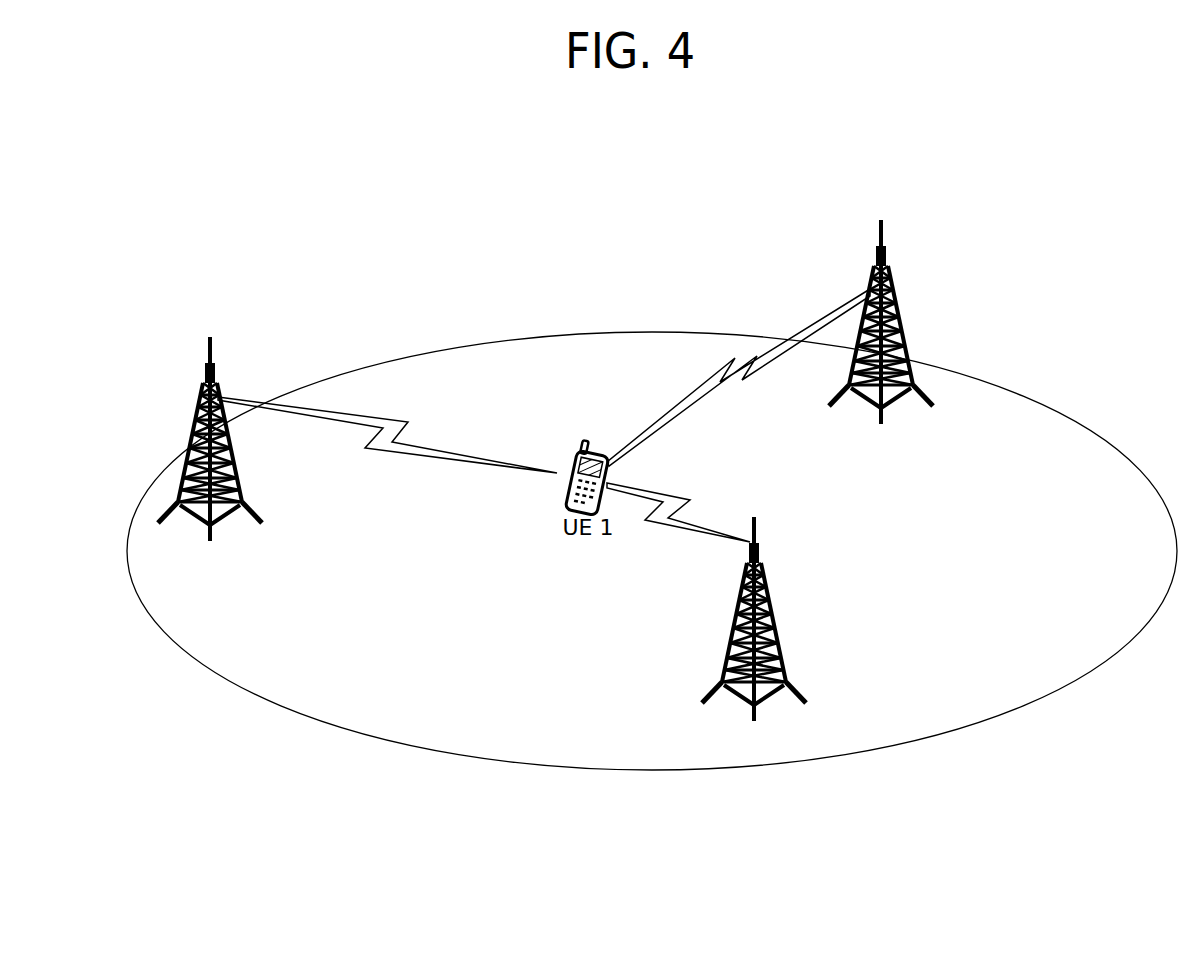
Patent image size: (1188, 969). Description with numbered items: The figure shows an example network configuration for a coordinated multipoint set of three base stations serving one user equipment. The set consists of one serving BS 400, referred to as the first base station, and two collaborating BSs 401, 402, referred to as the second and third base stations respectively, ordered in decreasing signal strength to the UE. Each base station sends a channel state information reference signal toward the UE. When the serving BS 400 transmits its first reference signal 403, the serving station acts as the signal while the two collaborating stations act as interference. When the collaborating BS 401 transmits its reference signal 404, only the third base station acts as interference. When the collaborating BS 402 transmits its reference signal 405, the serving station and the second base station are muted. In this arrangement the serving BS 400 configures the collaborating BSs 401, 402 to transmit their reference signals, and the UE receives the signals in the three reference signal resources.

The serving BS 400 is at (212, 344).
The collaborating BS 401 is at (879, 221).
The collaborating BS 402 is at (778, 626).
The CSI-RS 1 403 is at (397, 413).
The CSI-RS 2 transmission 404 is at (777, 348).
The CSI-RS 3 transmission 405 is at (733, 532).